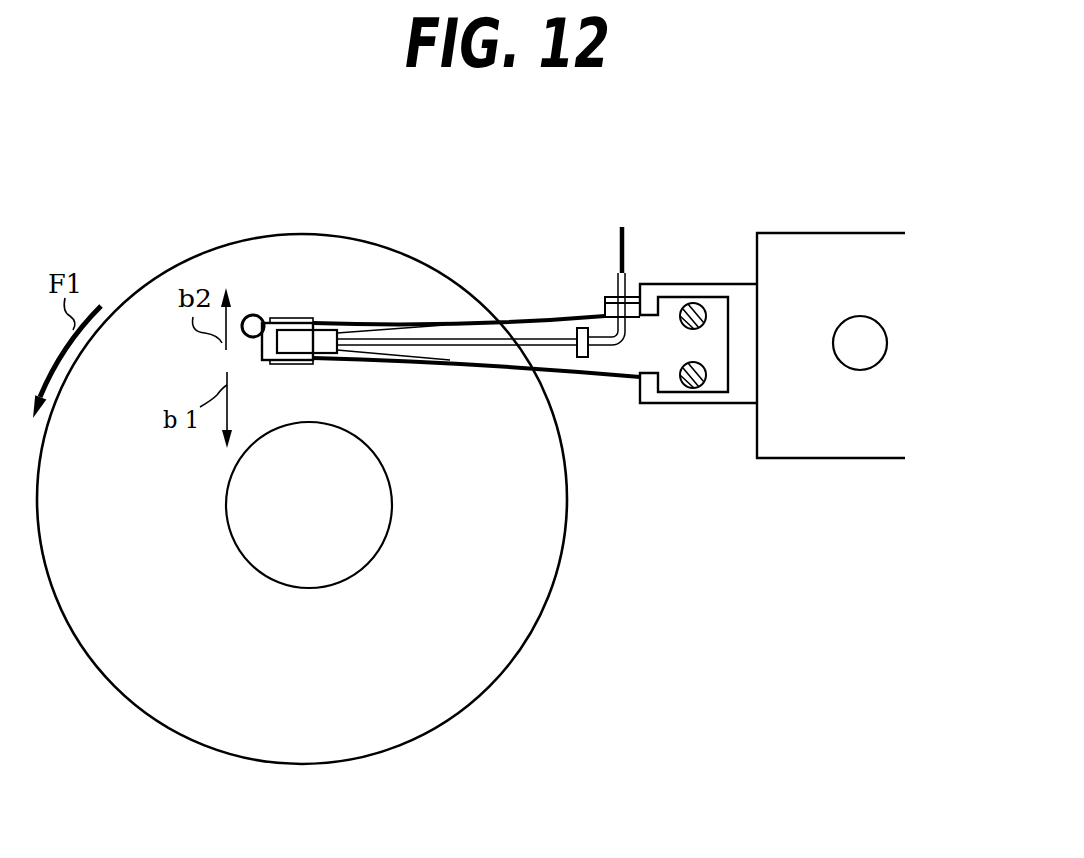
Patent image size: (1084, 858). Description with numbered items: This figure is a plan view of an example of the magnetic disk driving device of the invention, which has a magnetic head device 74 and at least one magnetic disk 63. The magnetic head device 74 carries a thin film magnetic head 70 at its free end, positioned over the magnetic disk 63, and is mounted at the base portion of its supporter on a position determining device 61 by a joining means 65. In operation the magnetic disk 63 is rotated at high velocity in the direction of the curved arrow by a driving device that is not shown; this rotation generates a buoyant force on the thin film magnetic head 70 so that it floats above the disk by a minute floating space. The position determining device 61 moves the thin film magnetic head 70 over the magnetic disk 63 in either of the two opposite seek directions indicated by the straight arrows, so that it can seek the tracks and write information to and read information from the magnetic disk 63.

The position determining device 61 is at (852, 435).
The magnetic disk 63 is at (507, 657).
The joining means 65 is at (694, 302).
The thin film magnetic head 70 is at (298, 362).
The magnetic head device 74 is at (531, 302).